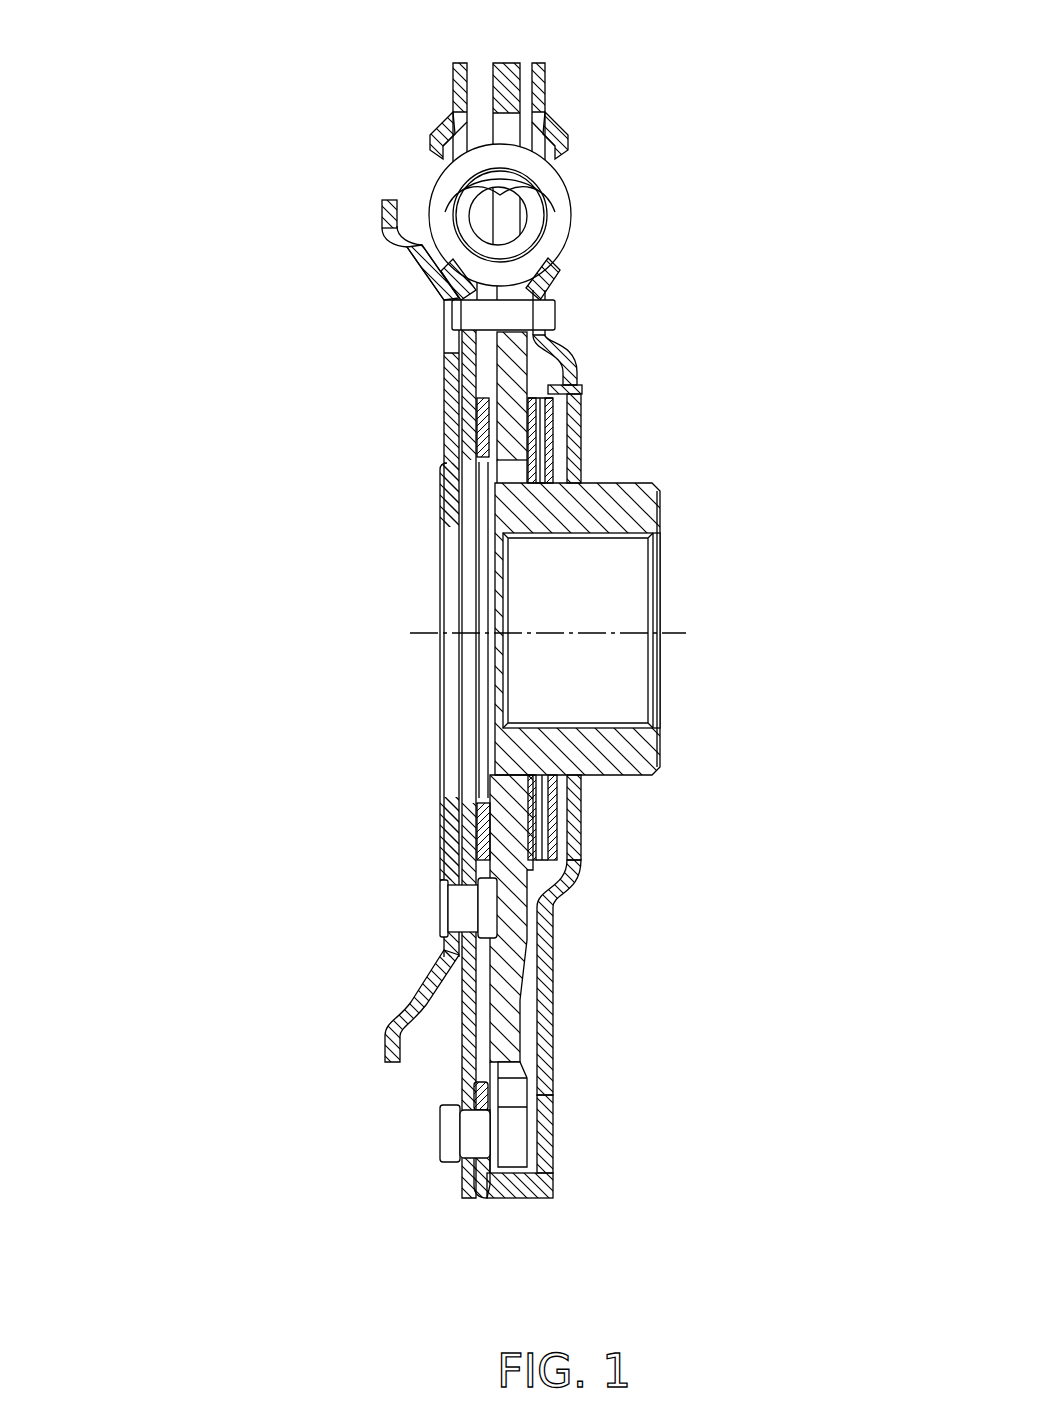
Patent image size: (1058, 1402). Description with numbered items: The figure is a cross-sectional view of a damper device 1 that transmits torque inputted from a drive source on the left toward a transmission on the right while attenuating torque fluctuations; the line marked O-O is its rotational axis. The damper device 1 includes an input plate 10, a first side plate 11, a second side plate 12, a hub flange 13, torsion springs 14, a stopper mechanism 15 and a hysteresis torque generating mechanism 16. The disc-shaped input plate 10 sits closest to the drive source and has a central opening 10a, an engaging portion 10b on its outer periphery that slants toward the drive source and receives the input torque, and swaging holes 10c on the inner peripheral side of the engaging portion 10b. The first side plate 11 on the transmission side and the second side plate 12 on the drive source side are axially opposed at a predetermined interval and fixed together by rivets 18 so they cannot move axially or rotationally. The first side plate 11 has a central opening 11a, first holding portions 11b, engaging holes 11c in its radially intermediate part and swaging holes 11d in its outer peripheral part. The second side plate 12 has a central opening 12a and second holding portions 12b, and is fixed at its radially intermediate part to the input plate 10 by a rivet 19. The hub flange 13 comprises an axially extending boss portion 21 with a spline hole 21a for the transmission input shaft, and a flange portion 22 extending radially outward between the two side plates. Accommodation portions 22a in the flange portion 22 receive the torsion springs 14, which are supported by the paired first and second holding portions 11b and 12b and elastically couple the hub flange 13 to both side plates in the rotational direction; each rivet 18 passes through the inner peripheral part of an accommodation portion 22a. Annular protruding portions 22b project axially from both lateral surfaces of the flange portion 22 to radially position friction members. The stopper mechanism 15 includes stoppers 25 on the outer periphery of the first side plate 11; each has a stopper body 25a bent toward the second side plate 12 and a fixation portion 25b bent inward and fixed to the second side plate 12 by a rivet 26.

The damper device 1 is at (277, 150).
The input plate 10 is at (443, 383).
The opening 10a is at (442, 488).
The engaging portion 10b is at (381, 221).
The swaging holes 10c is at (428, 278).
The first side plate 11 is at (547, 65).
The opening 11a is at (598, 774).
The first holding portions 11b is at (568, 136).
The engaging holes 11c is at (572, 399).
The swaging holes 11d is at (551, 1093).
The second side plate 12 is at (452, 75).
The opening 12a is at (462, 783).
The second holding portions 12b is at (440, 130).
The hub flange 13 is at (524, 992).
The torsion springs 14 is at (569, 215).
The stopper mechanism 15 is at (501, 1205).
The hysteresis torque generating mechanism 16 is at (579, 468).
The rivets 18 is at (551, 312).
The rivet 19 is at (457, 895).
The boss portion 21 is at (661, 490).
The spline hole 21a is at (596, 535).
The flange portion 22 is at (523, 906).
The accommodation portions 22a is at (517, 112).
The protruding portions 22b is at (493, 394).
The stoppers 25 is at (554, 1198).
The stopper body 25a is at (520, 1197).
The fixation portion 25b is at (480, 1099).
The rivets 26 is at (447, 1150).